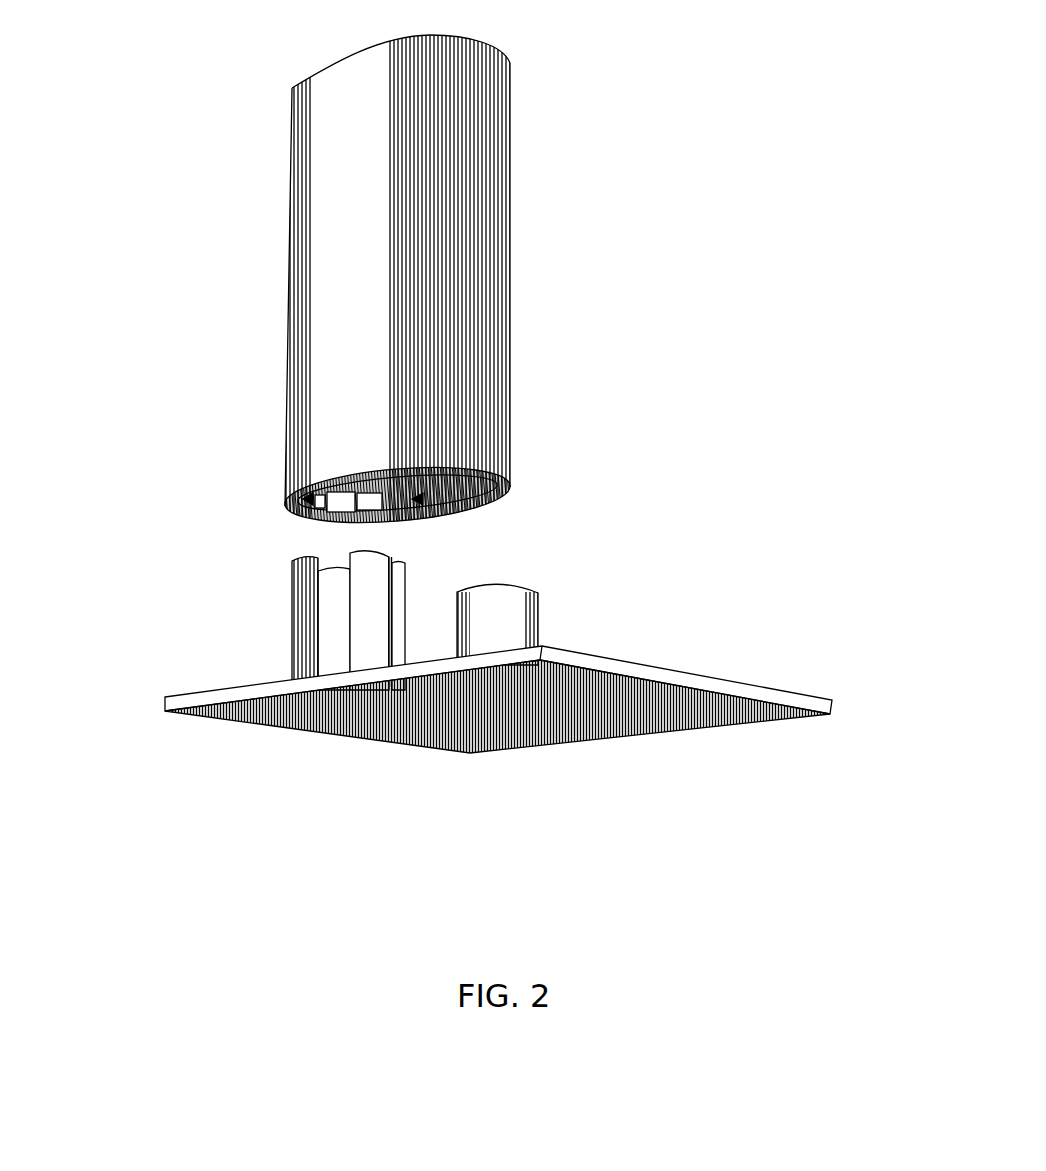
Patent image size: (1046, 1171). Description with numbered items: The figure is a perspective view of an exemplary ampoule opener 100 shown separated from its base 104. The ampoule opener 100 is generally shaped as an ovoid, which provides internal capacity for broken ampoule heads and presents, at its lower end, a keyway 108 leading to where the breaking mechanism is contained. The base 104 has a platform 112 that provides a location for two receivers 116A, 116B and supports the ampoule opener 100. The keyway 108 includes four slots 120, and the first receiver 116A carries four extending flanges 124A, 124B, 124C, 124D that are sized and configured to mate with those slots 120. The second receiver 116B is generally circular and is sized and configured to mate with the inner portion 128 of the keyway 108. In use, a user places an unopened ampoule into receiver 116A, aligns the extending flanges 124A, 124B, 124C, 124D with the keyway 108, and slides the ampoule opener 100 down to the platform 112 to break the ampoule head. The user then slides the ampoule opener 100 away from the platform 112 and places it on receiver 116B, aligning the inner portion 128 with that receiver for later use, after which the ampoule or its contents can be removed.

The ampoule opener 100 is at (426, 488).
The base 104 is at (426, 728).
The keyway 108 is at (283, 517).
The platform 112 is at (428, 750).
The receiver 116A is at (257, 657).
The receiver 116B is at (517, 612).
The slots 120 is at (356, 300).
The extending flange 124A is at (295, 676).
The extending flange 124B is at (328, 670).
The extending flange 124C is at (396, 666).
The extending flange 124D is at (443, 599).
The inner portion 128 is at (282, 493).